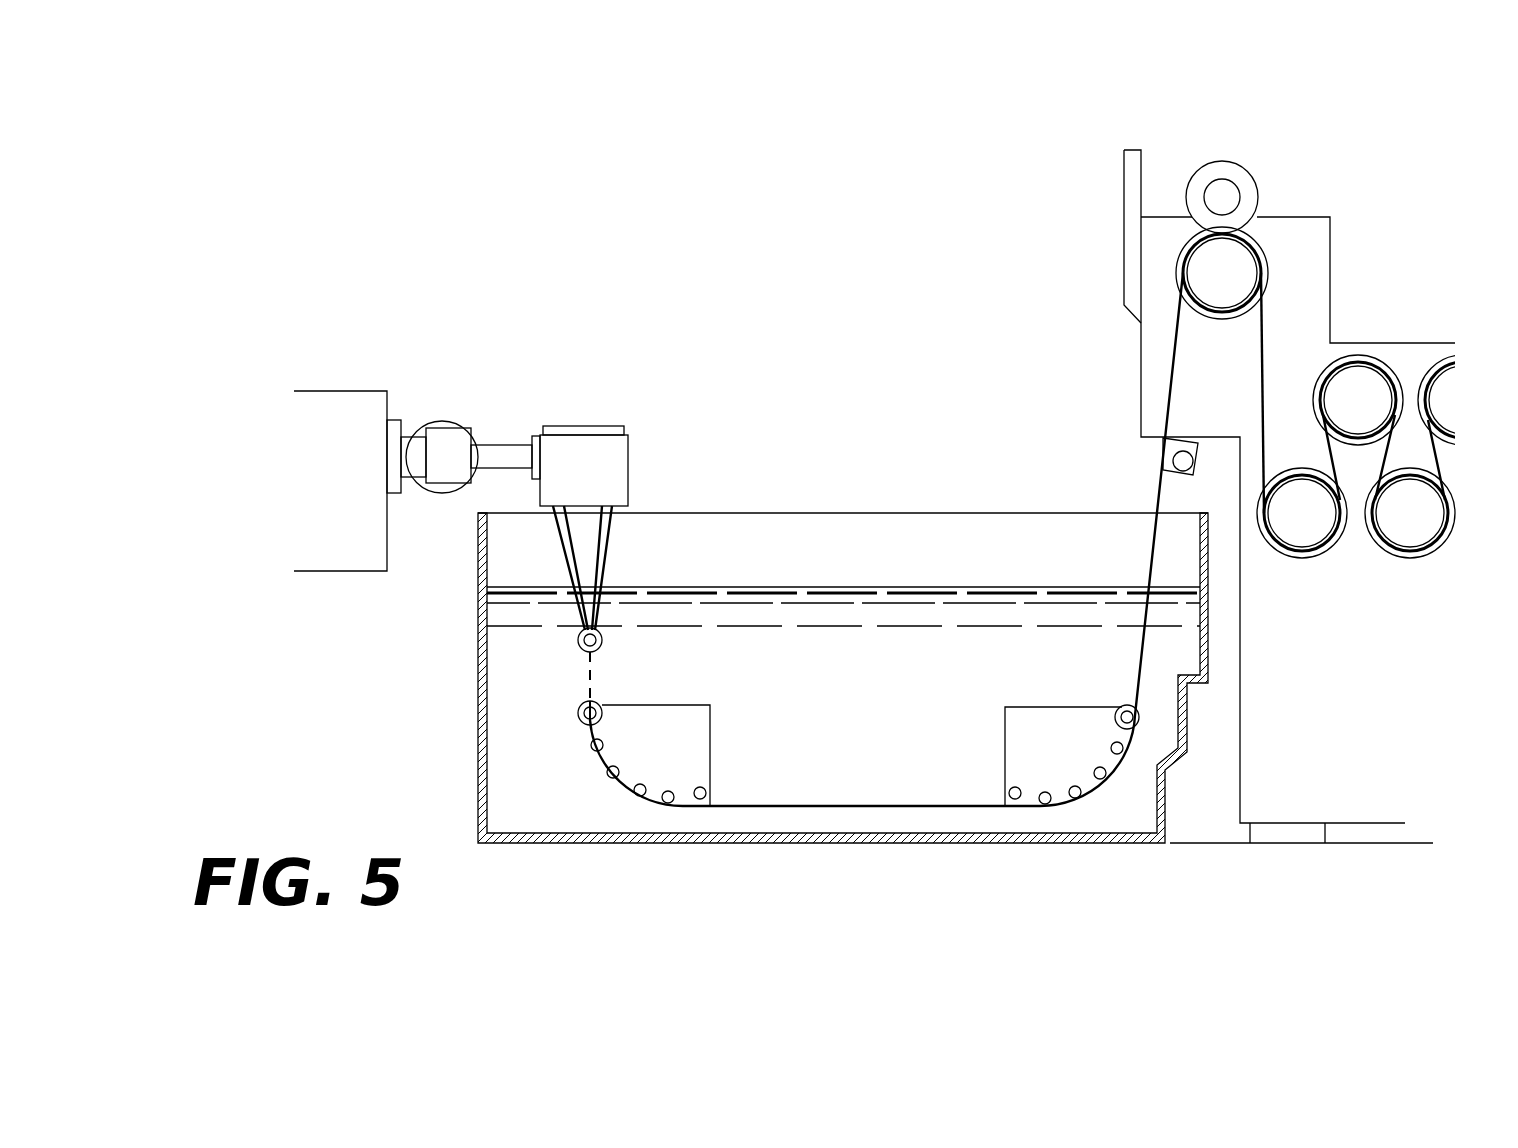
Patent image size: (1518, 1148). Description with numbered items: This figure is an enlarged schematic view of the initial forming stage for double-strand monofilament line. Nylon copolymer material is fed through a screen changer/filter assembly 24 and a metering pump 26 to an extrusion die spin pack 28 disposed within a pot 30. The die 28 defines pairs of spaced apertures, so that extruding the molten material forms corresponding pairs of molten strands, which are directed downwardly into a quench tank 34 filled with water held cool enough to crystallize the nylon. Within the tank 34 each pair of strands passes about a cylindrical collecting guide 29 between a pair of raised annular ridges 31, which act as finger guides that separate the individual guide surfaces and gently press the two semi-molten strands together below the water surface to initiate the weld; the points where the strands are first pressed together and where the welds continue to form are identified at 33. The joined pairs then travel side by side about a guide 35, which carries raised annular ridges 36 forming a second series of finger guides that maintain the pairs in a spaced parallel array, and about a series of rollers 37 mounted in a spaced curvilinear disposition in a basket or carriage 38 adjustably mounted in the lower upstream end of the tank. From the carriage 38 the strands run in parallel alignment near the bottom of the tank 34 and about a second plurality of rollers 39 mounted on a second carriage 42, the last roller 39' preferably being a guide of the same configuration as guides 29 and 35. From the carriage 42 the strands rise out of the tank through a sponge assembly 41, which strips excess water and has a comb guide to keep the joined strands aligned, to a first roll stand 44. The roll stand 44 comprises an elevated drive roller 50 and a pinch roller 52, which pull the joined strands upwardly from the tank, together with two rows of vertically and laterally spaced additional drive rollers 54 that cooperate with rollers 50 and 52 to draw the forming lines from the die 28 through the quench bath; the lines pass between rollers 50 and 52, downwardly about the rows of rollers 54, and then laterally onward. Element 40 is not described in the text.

The screen changer/filter assembly 24 is at (367, 412).
The metering pump 26 is at (462, 448).
The extrusion die spin pack 28 is at (620, 457).
The pot 30 is at (602, 427).
The cylindrical collecting guide 29 is at (580, 642).
The raised annular ridges 31 is at (580, 648).
The initial weld points 33 is at (590, 583).
The quench tank 34 is at (479, 689).
The guide 35 is at (594, 700).
The raised annular ridges 36 is at (601, 712).
The rollers 37 is at (698, 787).
The basket or carriage 38 is at (712, 722).
The second plurality of rollers 39 is at (1057, 767).
The last roller 39' is at (1083, 728).
The exit roller 40 is at (1117, 708).
The sponge assembly 41 is at (1163, 460).
The second carriage 42 is at (1013, 705).
The first roll stand 44 is at (1148, 375).
The drive roller 50 is at (1267, 258).
The pinch roller 52 is at (1250, 183).
The additional drive rollers 54 is at (1440, 363).